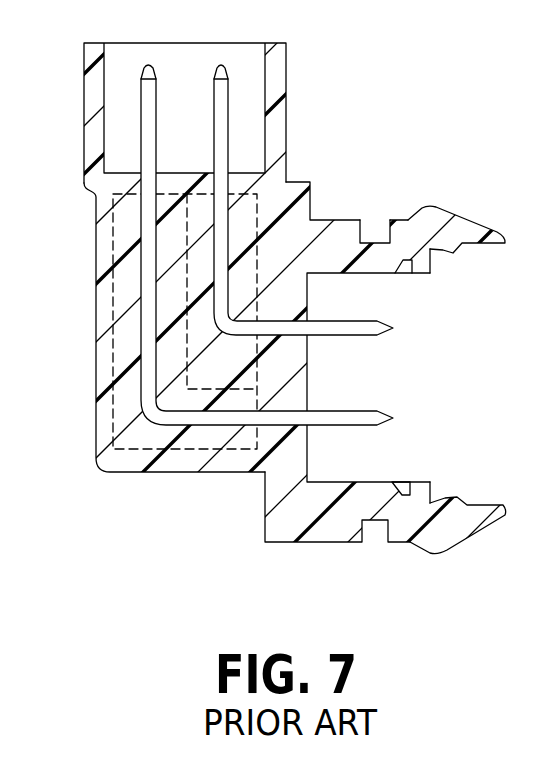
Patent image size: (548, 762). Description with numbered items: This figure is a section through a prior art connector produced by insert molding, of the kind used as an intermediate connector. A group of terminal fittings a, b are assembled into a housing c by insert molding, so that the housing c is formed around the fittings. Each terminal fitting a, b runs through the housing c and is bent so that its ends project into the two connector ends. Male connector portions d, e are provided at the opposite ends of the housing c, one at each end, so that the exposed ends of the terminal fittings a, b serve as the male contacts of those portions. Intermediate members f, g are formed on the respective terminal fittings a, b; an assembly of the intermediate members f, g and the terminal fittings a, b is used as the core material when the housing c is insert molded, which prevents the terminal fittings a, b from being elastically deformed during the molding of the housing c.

The terminal fitting a is at (148, 125).
The terminal fitting b is at (223, 118).
The housing c is at (102, 297).
The male connector portion d is at (337, 513).
The male connector portion e is at (92, 60).
The intermediate member f is at (110, 350).
The intermediate member g is at (256, 217).